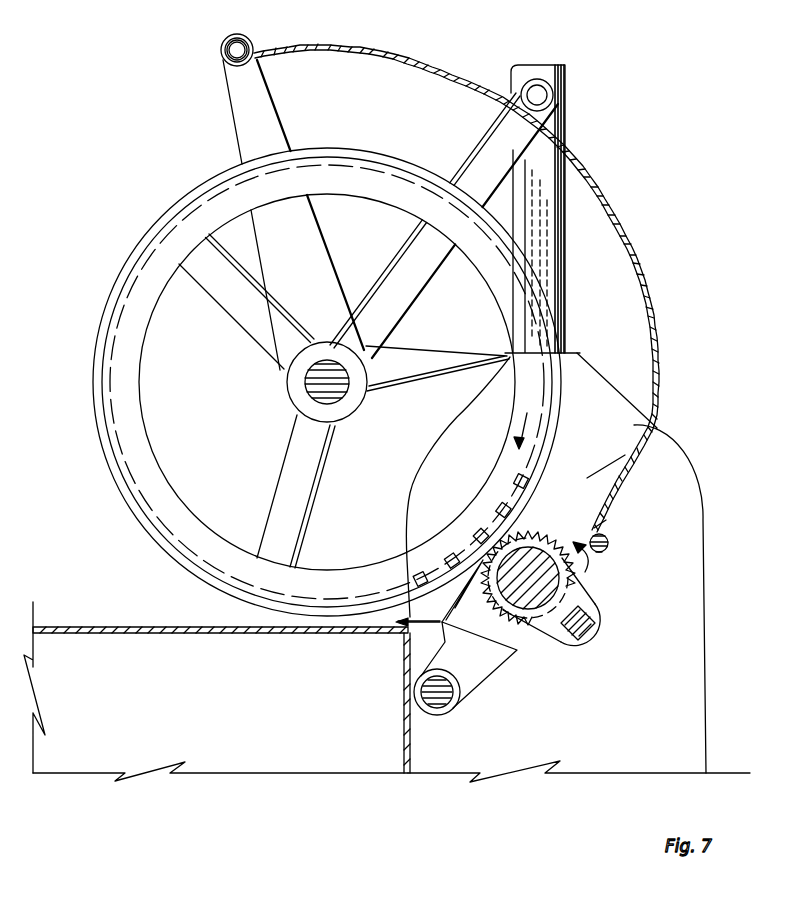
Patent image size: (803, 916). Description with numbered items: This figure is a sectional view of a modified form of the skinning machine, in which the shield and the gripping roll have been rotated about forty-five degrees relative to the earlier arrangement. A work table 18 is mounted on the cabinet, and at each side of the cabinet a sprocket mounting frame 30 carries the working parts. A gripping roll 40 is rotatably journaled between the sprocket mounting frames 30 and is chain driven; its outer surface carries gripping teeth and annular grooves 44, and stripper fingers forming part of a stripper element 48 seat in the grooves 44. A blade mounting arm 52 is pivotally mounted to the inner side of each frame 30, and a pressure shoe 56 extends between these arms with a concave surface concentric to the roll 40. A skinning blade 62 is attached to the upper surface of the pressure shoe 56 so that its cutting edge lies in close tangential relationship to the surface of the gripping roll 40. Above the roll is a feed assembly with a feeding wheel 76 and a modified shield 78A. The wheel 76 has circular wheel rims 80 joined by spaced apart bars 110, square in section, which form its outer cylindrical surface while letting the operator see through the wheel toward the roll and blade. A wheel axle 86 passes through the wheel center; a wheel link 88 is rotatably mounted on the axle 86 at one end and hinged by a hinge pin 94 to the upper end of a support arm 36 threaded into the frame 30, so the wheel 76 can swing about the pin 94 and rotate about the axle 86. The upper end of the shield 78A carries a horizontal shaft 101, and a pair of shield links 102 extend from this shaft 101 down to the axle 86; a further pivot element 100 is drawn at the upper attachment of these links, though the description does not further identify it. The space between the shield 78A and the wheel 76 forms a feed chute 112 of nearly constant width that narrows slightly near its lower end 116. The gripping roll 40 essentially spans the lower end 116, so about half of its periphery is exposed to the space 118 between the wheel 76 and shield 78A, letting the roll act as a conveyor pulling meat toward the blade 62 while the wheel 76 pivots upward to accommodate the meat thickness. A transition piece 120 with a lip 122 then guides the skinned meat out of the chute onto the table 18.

The work table 18 is at (121, 627).
The sprocket mounting frame 30 is at (673, 445).
The support arm 36 is at (566, 127).
The gripping roll 40 is at (584, 568).
The annular grooves 44 is at (567, 585).
The stripper element 48 is at (598, 617).
The blade mounting arm 52 is at (484, 690).
The pressure shoe 56 is at (500, 663).
The skinning blade 62 is at (478, 556).
The feeding wheel 76 is at (92, 342).
The modified shield 78A is at (656, 313).
The wheel rim 80 is at (104, 356).
The wheel axle 86 is at (291, 402).
The wheel link 88 is at (497, 122).
The hinge pin 94 is at (548, 97).
The pivot pin 100 is at (242, 35).
The horizontal shaft 101 is at (253, 43).
The shield link 102 is at (286, 131).
The spaced apart bars 110 is at (515, 478).
The feed chute 112 is at (242, 215).
The lower end 116 is at (598, 527).
The space 118 is at (625, 455).
The transition piece 120 is at (410, 614).
The lip 122 is at (398, 620).